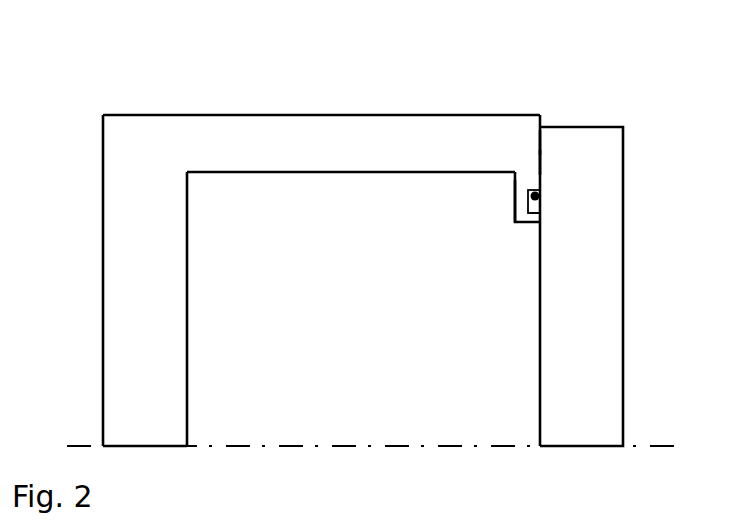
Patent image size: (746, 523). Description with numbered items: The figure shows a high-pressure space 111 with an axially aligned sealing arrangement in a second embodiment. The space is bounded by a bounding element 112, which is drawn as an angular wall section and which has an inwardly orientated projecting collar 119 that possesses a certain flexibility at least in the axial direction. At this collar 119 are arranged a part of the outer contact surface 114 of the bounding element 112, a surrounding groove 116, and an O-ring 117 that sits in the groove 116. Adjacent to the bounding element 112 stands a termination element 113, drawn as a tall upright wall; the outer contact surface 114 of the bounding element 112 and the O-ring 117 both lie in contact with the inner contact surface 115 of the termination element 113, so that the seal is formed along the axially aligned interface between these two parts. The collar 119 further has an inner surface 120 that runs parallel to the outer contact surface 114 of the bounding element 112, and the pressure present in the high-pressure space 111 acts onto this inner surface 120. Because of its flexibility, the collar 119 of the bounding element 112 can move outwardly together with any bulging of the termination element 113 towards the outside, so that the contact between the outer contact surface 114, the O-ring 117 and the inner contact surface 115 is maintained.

The high-pressure space 111 is at (456, 282).
The bounding element 112 is at (198, 127).
The termination element 113 is at (610, 412).
The outer contact surface 114 is at (540, 162).
The inner contact surface 115 is at (542, 143).
The surrounding groove 116 is at (539, 204).
The O-ring 117 is at (538, 193).
The projecting collar 119 is at (539, 214).
The inner surface 120 is at (513, 202).